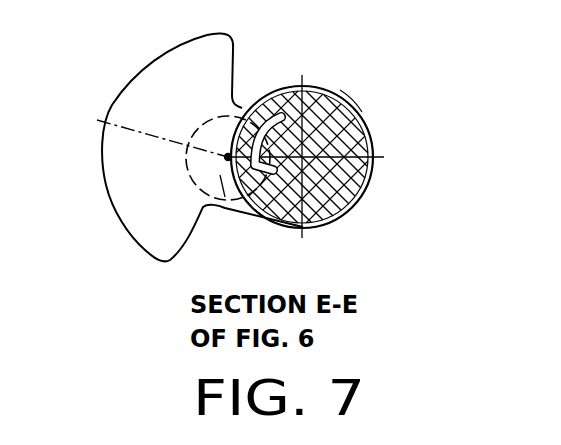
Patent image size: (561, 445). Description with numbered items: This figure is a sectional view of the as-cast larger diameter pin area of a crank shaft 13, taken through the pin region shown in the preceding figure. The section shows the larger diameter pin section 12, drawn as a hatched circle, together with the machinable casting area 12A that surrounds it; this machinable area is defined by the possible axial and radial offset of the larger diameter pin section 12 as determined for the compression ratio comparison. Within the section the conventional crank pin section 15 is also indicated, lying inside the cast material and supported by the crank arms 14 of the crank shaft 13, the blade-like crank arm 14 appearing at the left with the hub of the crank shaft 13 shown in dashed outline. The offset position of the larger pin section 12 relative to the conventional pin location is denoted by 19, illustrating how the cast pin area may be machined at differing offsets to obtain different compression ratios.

The larger diameter pin section 12 is at (342, 104).
The machinable casting area 12A is at (373, 171).
The crank shaft 13 is at (225, 196).
The crank arms 14 is at (125, 219).
The conventional crank pin section 15 is at (352, 129).
The offset position of the larger pin section 19 is at (366, 81).